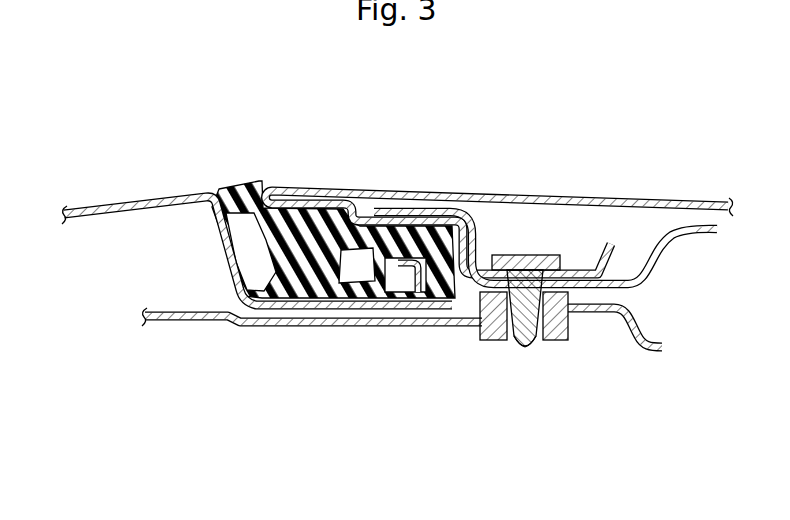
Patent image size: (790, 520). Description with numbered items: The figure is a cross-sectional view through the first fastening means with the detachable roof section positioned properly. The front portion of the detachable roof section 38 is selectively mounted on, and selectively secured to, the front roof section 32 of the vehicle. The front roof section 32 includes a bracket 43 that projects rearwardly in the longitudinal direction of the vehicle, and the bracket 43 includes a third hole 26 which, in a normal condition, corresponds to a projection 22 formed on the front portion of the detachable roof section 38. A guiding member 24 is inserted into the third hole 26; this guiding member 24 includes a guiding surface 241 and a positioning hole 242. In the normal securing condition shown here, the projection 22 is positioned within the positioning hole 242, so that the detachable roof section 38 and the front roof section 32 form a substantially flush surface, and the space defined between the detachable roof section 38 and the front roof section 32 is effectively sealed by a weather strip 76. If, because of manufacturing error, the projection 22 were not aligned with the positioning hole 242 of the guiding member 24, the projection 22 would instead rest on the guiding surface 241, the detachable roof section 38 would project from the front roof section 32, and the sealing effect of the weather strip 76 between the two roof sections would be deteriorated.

The front roof section 32 is at (195, 186).
The weather strip 76 is at (252, 184).
The detachable roof section 38 is at (540, 188).
The bracket 43 is at (315, 313).
The guiding member 24 is at (566, 343).
The third hole 26 is at (480, 334).
The projection 22 is at (531, 341).
The guiding surface 241 is at (514, 338).
The positioning hole 242 is at (547, 345).